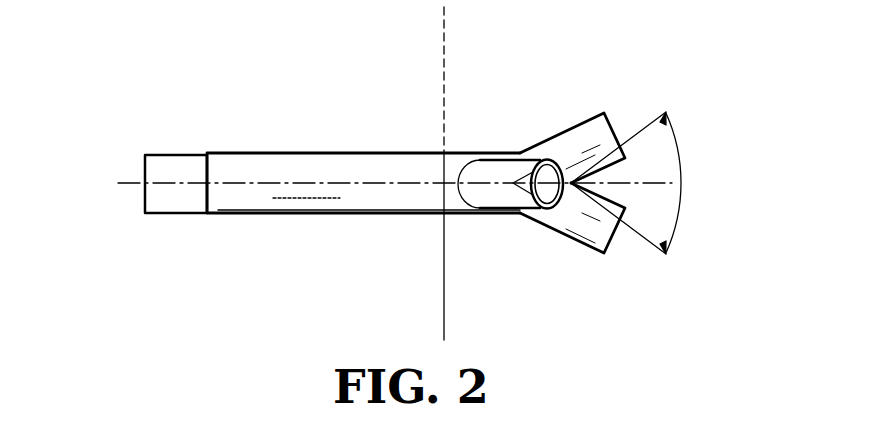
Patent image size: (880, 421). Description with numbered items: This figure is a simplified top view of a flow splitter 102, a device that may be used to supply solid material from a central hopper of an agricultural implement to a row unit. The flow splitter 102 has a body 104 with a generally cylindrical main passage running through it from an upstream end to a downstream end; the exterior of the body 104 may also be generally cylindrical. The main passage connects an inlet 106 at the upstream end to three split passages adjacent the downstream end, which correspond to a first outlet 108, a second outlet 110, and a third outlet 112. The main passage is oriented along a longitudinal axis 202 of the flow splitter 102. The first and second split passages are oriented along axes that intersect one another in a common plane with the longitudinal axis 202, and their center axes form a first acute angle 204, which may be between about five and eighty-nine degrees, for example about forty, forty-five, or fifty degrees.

The flow splitter 102 is at (238, 93).
The body 104 is at (313, 154).
The inlet 106 is at (172, 200).
The first outlet 108 is at (567, 236).
The second outlet 110 is at (560, 132).
The third outlet 112 is at (468, 197).
The longitudinal axis 202 is at (355, 196).
The first acute angle 204 is at (688, 172).